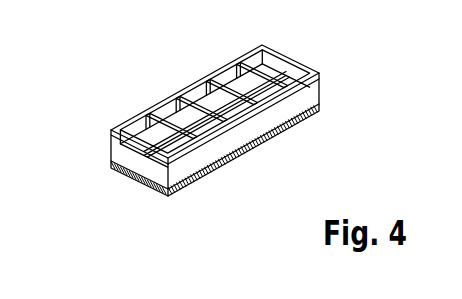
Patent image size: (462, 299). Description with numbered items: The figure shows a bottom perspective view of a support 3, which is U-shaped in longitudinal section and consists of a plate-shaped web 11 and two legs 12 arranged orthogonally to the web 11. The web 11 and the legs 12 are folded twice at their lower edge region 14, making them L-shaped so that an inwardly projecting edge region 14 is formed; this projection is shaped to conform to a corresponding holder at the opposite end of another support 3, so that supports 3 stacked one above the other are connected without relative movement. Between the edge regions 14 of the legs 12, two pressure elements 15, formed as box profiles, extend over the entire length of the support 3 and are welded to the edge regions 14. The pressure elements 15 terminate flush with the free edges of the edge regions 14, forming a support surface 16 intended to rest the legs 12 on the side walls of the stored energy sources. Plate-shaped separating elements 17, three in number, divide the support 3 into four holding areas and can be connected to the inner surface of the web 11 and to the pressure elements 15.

The support 3 is at (103, 161).
The web 11 is at (221, 132).
The legs 12 is at (301, 61).
The edge region 14 is at (191, 143).
The pressure elements 15 is at (152, 116).
The support surface 16 is at (202, 95).
The separating elements 17 is at (266, 139).